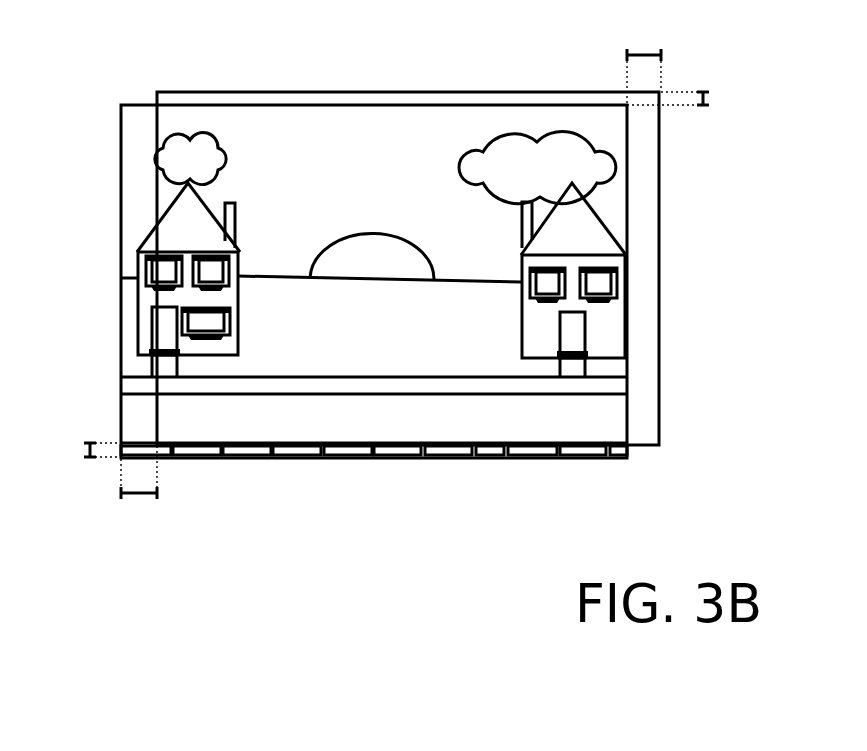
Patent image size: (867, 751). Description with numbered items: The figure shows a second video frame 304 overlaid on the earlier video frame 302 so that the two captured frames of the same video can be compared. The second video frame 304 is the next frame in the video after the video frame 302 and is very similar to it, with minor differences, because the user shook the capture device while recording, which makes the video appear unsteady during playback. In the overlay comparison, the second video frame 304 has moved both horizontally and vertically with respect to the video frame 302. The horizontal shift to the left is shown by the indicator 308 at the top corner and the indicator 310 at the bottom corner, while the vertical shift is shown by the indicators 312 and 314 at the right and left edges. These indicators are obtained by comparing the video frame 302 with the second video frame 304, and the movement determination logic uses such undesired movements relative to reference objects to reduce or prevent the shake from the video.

The video frame 302 is at (122, 104).
The second video frame 304 is at (410, 92).
The indicator 308 is at (639, 54).
The indicator 310 is at (146, 497).
The indicator 312 is at (711, 127).
The indicator 314 is at (78, 432).